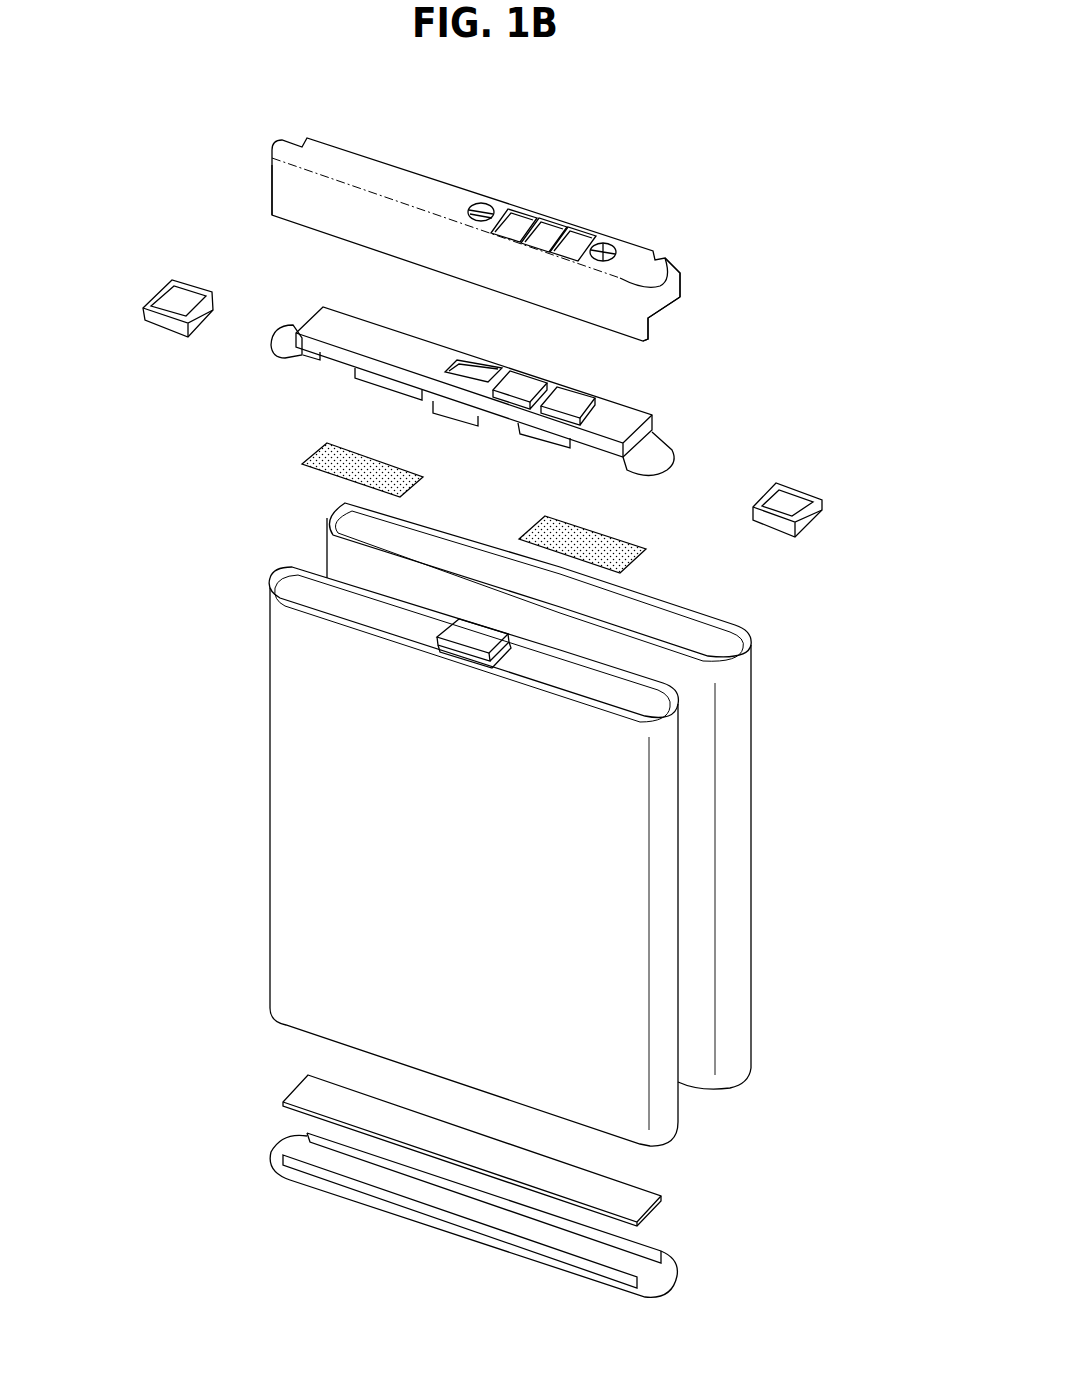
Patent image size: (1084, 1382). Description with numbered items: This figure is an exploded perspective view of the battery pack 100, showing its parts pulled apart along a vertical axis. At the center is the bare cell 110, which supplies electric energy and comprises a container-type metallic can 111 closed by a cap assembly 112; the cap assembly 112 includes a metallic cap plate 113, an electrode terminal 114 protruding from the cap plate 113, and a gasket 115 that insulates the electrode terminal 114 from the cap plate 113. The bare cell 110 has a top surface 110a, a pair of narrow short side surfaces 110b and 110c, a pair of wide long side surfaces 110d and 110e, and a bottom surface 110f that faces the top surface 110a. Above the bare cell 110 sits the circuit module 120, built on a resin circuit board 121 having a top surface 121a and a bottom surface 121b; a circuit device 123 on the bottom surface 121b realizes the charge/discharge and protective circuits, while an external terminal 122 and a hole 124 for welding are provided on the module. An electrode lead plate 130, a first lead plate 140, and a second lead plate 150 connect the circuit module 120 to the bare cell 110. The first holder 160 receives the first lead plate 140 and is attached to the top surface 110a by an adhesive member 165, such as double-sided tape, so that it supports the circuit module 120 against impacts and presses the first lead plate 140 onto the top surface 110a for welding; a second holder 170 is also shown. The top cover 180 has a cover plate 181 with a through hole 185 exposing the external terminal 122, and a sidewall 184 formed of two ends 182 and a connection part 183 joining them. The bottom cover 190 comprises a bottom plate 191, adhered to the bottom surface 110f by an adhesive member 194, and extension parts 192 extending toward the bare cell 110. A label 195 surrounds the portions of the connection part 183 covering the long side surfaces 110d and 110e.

The battery pack 100 is at (754, 128).
The bare cell 110 is at (503, 828).
The top surface 110a is at (378, 620).
The short side surface 110b is at (268, 770).
The short side surface 110c is at (665, 926).
The long side surface 110d is at (328, 900).
The long side surface 110e is at (680, 1102).
The bottom surface 110f is at (665, 1148).
The can 111 is at (290, 963).
The cap assembly 112 is at (470, 831).
The cap plate 113 is at (315, 620).
The electrode terminal 114 is at (479, 640).
The gasket 115 is at (448, 648).
The circuit module 120 is at (486, 373).
The circuit board 121 is at (318, 305).
The top surface of circuit board 121a is at (392, 337).
The bottom surface of circuit board 121b is at (312, 373).
The external terminal 122 is at (562, 382).
The circuit device 123 is at (372, 380).
The hole for welding 124 is at (474, 370).
The electrode lead plate 130 is at (458, 415).
The first lead plate 140 is at (662, 460).
The second lead plate 150 is at (279, 346).
The first holder 160 is at (811, 477).
The adhesive member 165 is at (320, 455).
The second holder 170 is at (153, 278).
The top cover 180 is at (471, 236).
The cover plate 181 is at (413, 180).
The ends 182 is at (272, 165).
The connection part 183 is at (650, 330).
The sidewall 184 is at (290, 180).
The through hole 185 is at (522, 220).
The bottom cover 190 is at (473, 1204).
The bottom plate 191 is at (279, 1146).
The extension parts 192 is at (382, 1163).
The adhesive member 194 is at (645, 1200).
The label 195 is at (580, 816).